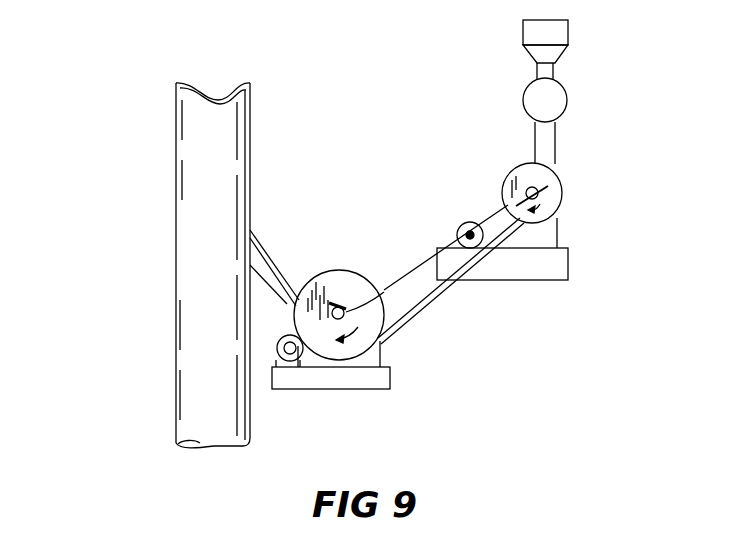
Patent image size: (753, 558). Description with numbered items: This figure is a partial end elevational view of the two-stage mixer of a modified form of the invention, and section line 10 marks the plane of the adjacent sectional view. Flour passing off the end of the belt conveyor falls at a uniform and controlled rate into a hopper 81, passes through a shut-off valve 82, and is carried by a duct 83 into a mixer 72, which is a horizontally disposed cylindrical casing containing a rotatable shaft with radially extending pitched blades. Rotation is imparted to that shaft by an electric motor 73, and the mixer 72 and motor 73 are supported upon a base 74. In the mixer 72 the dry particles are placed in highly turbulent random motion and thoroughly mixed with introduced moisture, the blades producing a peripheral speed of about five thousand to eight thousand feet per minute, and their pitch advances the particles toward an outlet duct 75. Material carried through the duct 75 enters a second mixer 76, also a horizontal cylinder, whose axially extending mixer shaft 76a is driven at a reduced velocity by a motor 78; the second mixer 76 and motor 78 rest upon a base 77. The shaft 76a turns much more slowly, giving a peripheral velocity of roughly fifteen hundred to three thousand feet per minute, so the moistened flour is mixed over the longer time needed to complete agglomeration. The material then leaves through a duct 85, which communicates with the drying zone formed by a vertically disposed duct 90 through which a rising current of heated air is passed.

The section line 10- 10 is at (138, 157).
The vertically disposed duct 90 is at (252, 128).
The duct 85 is at (276, 263).
The second mixer 76 is at (344, 270).
The mixer shaft 76a is at (372, 298).
The base 77 is at (343, 390).
The motor 78 is at (283, 338).
The outlet duct 75 is at (412, 311).
The electric motor 73 is at (458, 235).
The mixer 72 is at (512, 166).
The base 74 is at (536, 282).
The duct 83 is at (556, 143).
The shut-off valve 82 is at (567, 100).
The hopper 81 is at (561, 33).